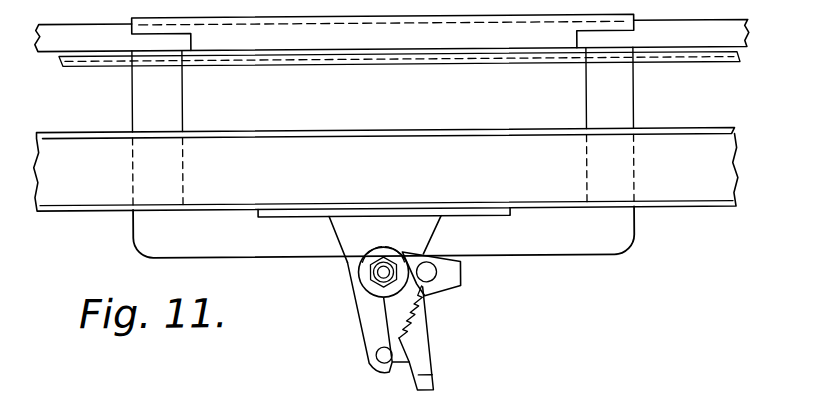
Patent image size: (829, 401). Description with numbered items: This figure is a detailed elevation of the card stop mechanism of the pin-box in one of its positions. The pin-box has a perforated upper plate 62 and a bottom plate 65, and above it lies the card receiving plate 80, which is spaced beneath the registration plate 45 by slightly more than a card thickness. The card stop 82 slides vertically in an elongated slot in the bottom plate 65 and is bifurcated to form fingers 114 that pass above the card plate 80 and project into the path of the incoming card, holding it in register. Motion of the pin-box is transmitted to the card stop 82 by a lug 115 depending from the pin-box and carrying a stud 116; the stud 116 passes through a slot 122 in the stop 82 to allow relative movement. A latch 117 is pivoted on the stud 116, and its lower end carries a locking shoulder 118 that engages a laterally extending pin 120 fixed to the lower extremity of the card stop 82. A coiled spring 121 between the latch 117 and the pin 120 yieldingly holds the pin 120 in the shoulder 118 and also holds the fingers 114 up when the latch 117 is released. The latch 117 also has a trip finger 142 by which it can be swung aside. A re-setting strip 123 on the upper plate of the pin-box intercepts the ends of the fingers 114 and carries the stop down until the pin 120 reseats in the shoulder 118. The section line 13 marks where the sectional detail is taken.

The section line 13— 13 is at (377, 80).
The re-setting strip 123 is at (350, 40).
The registration plate 45 is at (697, 41).
The card receiving plate 80 is at (483, 58).
The fingers 114 is at (172, 106).
The bottom plate 65 is at (237, 207).
The upper plate 62 is at (378, 230).
The card stop 82 is at (570, 243).
The lug 115 is at (343, 232).
The coiled spring 121 is at (390, 318).
The stud 116 is at (375, 272).
The slot 122 is at (385, 230).
The latch 117 is at (450, 272).
The locking shoulder 118 is at (409, 357).
The trip finger 142 is at (421, 384).
The pin 120 is at (375, 355).